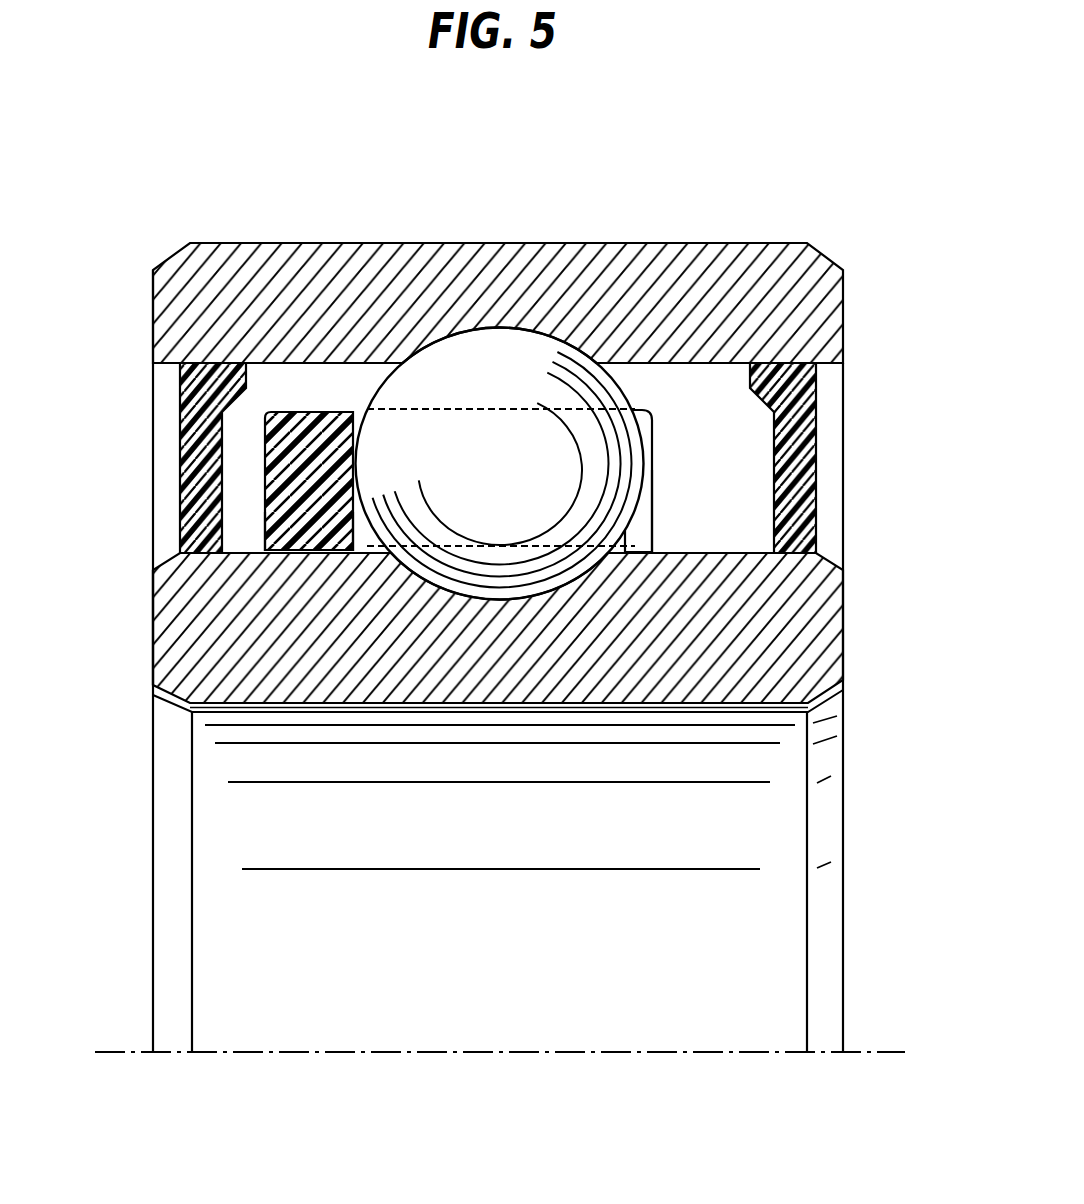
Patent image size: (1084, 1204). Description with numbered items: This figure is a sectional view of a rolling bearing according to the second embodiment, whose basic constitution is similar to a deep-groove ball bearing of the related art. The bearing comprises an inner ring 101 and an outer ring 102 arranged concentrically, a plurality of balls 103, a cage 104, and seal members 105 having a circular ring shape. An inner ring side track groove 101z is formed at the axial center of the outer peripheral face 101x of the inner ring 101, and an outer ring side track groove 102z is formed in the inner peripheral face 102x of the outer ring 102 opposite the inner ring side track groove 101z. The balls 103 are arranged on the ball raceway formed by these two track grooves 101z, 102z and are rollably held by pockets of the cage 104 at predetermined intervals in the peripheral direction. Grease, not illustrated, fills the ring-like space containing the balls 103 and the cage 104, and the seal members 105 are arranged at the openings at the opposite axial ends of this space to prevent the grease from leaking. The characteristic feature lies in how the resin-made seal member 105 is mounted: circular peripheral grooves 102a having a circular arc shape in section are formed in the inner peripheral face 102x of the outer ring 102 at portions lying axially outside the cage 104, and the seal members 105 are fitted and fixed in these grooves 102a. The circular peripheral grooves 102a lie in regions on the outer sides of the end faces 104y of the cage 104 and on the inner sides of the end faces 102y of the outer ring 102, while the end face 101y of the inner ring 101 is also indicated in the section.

The inner ring 101 is at (803, 612).
The outer peripheral face of the inner ring 101x is at (717, 553).
The end face of the inner ring 101y is at (153, 620).
The inner ring side track groove 101z is at (558, 593).
The outer ring 102 is at (633, 250).
The circular peripheral groove 102a is at (191, 357).
The inner peripheral face of the outer ring 102x is at (284, 363).
The end face of the outer ring 102y is at (153, 330).
The outer ring side track groove 102z is at (477, 332).
The ball 103 is at (543, 350).
The cage 104 is at (325, 417).
The end face of the cage 104y is at (265, 512).
The seal member 105 is at (190, 443).